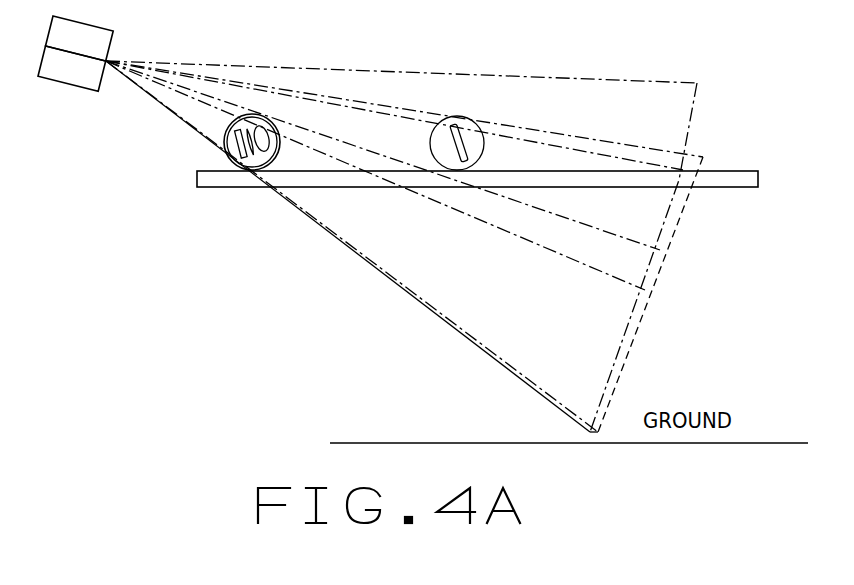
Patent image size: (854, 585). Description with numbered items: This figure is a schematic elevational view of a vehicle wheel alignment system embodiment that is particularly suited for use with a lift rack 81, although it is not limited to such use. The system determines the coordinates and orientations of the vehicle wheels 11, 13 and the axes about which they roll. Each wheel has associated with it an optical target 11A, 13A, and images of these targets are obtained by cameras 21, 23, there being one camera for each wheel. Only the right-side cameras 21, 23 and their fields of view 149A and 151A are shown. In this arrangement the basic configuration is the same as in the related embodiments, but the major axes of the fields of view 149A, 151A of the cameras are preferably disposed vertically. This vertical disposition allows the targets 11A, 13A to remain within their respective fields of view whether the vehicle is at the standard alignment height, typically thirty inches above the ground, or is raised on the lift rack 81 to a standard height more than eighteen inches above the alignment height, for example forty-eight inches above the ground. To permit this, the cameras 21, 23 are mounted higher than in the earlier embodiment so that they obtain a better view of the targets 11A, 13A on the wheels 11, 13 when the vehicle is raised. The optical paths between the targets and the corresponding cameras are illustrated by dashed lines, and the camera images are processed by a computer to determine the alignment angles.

The camera 21 is at (80, 38).
The camera 23 is at (72, 68).
The vehicle wheel 11 is at (264, 116).
The optical target 11A is at (225, 148).
The vehicle wheel 13 is at (483, 143).
The optical target 13A is at (449, 132).
The field of view 151A is at (688, 118).
The lift rack 81 is at (713, 188).
The field of view 149A is at (637, 330).